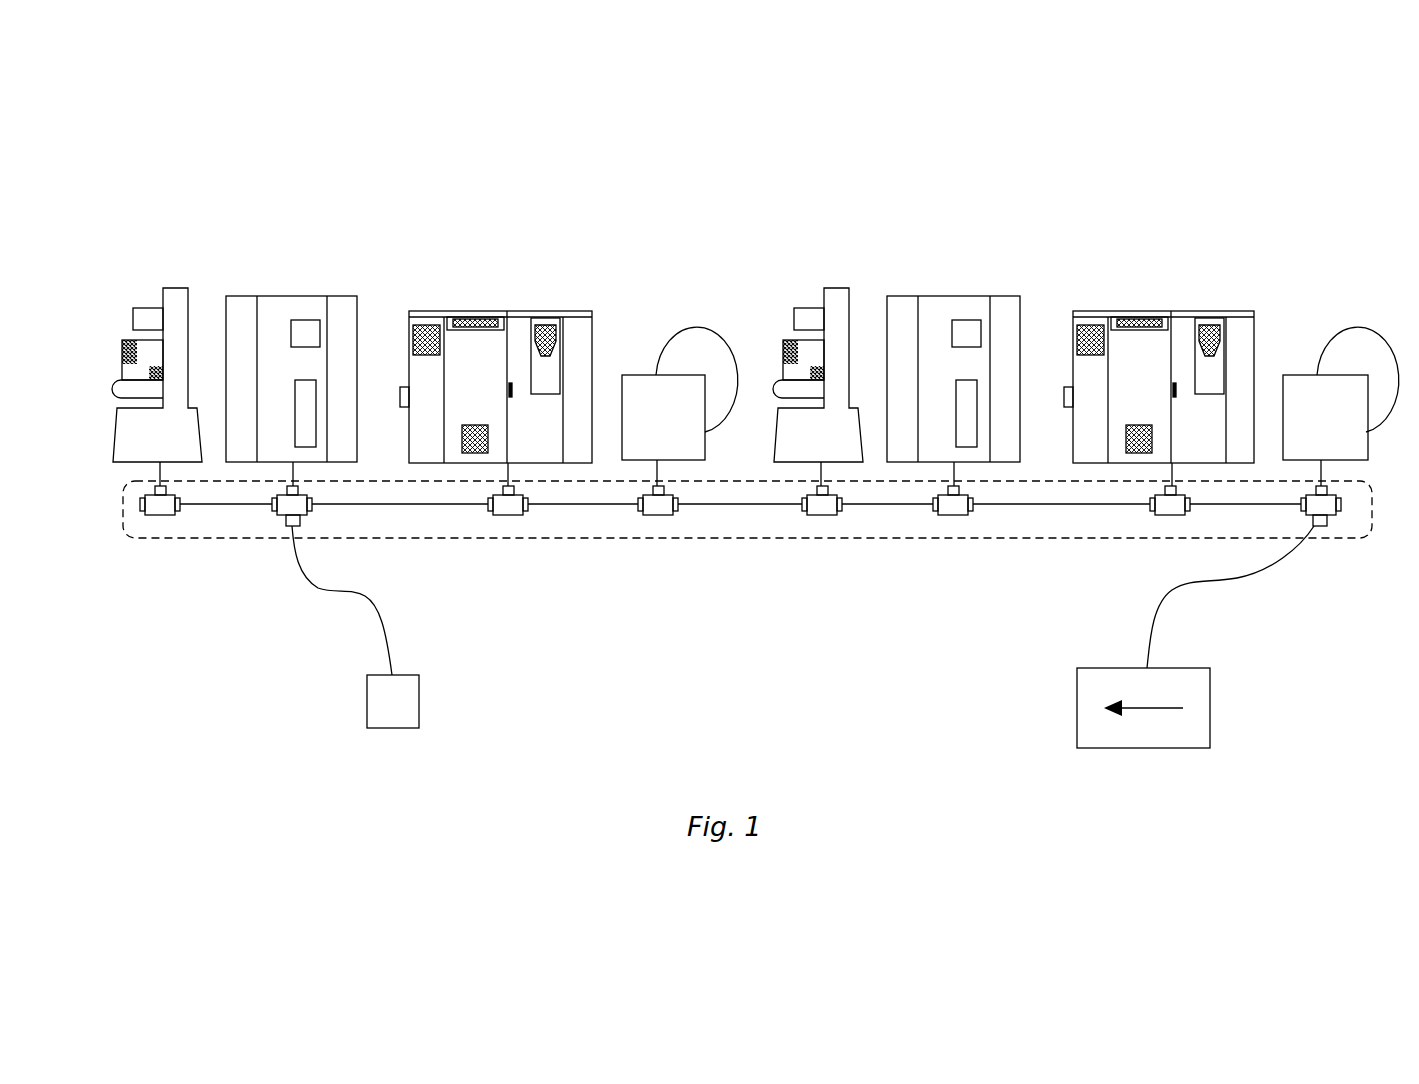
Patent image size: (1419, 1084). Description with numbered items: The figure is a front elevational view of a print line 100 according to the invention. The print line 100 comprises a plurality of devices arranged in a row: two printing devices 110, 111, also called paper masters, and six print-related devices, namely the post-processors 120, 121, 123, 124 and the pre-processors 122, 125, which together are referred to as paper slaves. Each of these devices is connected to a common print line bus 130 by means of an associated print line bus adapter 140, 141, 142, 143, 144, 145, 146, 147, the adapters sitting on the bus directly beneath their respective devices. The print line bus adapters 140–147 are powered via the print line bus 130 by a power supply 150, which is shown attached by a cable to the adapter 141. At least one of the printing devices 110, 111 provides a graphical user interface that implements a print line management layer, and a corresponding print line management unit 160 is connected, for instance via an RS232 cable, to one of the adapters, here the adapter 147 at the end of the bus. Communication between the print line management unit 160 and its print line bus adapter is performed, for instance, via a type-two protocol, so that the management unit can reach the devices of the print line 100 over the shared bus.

The print line 100 is at (992, 236).
The printing device 110 is at (515, 310).
The printing device 111 is at (1183, 312).
The post-processor 120 is at (175, 287).
The post-processor 121 is at (317, 297).
The pre-processor 122 is at (632, 373).
The post-processor 123 is at (836, 287).
The post-processor 124 is at (977, 297).
The pre-processor 125 is at (1292, 374).
The print line bus 130 is at (742, 504).
The print line bus adapter 140 is at (158, 515).
The print line bus adapter 141 is at (307, 515).
The print line bus adapter 142 is at (506, 516).
The print line bus adapter 143 is at (655, 516).
The print line bus adapter 144 is at (820, 516).
The print line bus adapter 145 is at (953, 516).
The print line bus adapter 146 is at (1168, 516).
The print line bus adapter 147 is at (1335, 515).
The power supply 150 is at (419, 703).
The print line management unit 160 is at (1210, 705).